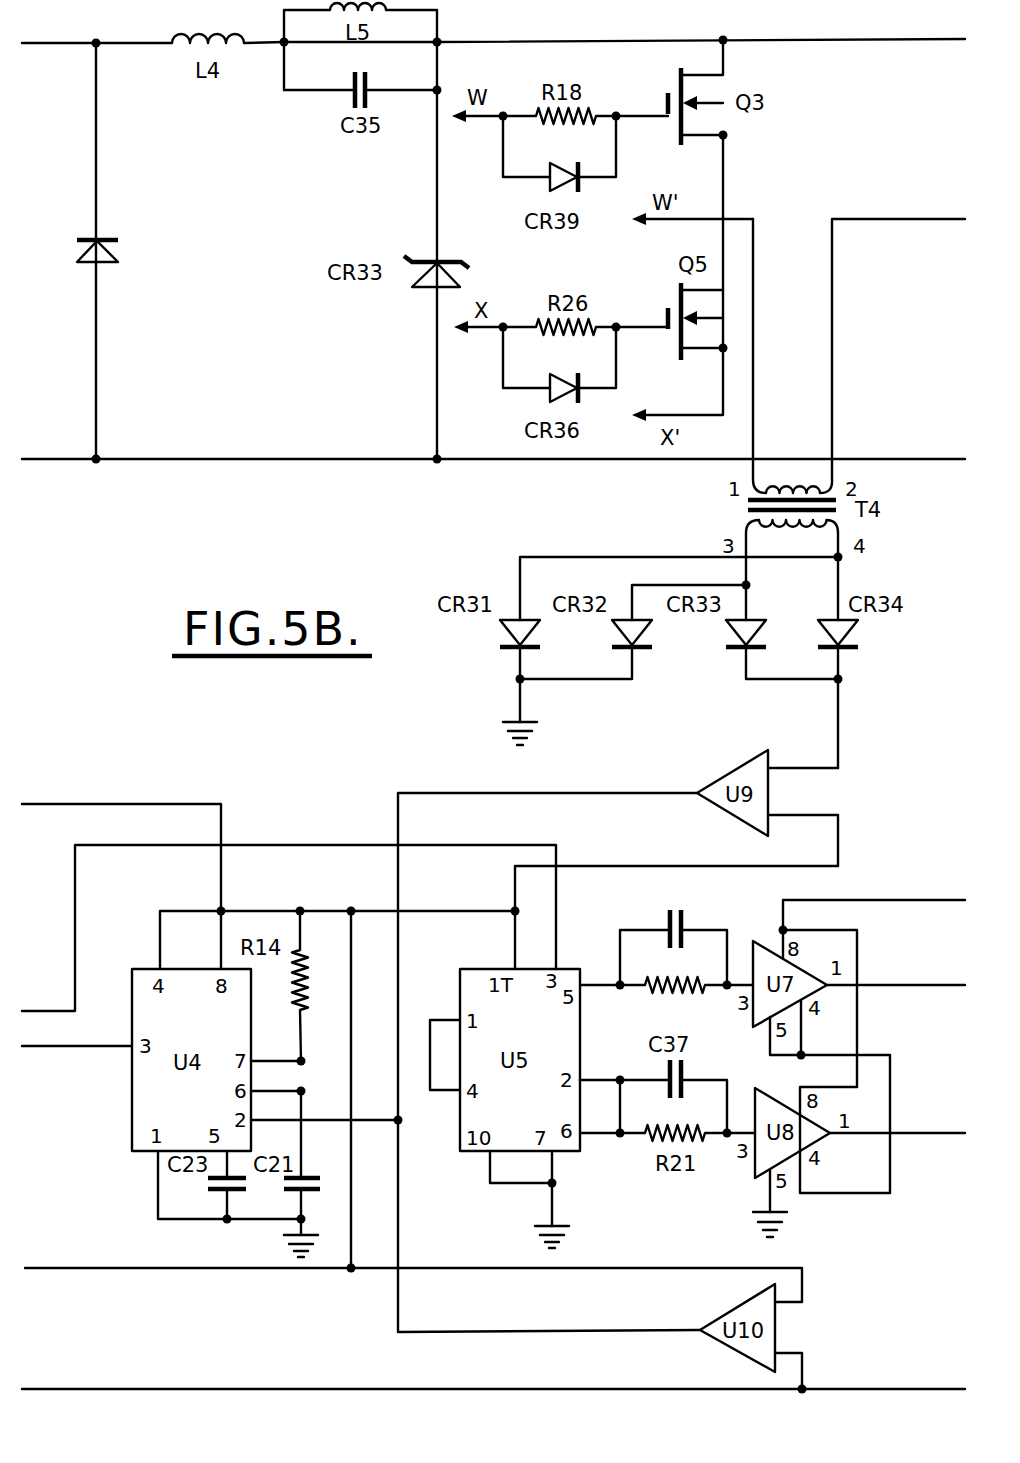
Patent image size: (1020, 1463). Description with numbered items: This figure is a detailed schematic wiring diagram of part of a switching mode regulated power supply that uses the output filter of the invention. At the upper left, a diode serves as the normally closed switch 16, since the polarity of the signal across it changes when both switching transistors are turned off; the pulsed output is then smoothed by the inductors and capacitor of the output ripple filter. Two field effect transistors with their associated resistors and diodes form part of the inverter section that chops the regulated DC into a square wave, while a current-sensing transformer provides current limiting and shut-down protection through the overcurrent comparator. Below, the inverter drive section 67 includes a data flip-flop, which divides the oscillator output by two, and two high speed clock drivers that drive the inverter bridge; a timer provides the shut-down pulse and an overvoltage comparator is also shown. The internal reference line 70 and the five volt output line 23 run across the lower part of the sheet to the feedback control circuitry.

The normally closed switch 16 is at (111, 237).
The inverter drive section 67 is at (710, 920).
The internal reference line 70 is at (98, 1268).
The output line 23 is at (143, 1389).